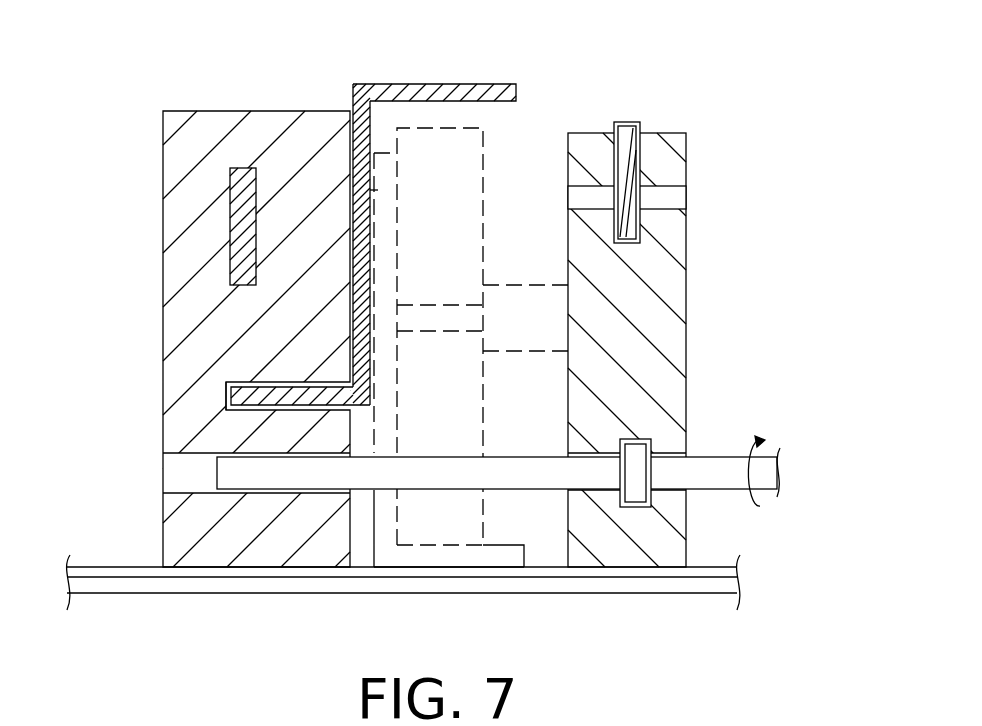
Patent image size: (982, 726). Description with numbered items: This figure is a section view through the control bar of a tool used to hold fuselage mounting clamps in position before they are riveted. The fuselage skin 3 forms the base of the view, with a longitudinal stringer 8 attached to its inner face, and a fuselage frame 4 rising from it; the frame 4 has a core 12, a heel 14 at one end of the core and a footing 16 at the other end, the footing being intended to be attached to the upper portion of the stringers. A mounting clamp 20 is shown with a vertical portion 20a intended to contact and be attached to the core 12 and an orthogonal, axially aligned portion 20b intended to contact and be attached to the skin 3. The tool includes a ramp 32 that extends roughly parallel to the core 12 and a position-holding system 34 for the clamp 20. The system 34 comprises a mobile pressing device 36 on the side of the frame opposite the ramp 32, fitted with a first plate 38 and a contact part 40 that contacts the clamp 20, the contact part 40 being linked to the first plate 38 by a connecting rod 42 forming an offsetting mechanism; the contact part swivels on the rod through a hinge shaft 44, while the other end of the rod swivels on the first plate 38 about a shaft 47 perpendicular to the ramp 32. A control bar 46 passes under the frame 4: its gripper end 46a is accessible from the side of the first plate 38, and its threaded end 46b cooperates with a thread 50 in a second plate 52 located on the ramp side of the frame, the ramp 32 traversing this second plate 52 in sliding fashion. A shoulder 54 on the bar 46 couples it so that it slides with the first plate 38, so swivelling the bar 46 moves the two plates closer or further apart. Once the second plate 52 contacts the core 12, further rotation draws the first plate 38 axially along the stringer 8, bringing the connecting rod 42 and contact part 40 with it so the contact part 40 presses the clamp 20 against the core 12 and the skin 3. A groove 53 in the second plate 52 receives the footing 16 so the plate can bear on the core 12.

The skin 3 is at (213, 586).
The fuselage frame 4 is at (476, 74).
The longitudinal stringer 8 is at (285, 572).
The core 12 is at (360, 300).
The heel 14 is at (430, 88).
The footing 16 is at (231, 400).
The mounting clamp 20 is at (304, 216).
The vertical portion 20a is at (378, 190).
The orthogonal portion 20b is at (457, 552).
The ramp 32 is at (237, 223).
The position-holding system 34 is at (629, 94).
The mobile pressing device 36 is at (694, 338).
The first plate 38 is at (686, 273).
The contact part 40 is at (483, 168).
The connecting rod 42 is at (640, 160).
The hinge shaft 44 is at (522, 297).
The control bar 46 is at (733, 490).
The gripper end 46a is at (718, 458).
The threaded end 46b is at (230, 470).
The shaft 47 is at (676, 197).
The thread 50 is at (197, 491).
The second plate 52 is at (184, 136).
The groove 53 is at (226, 390).
The shoulder 54 is at (635, 495).